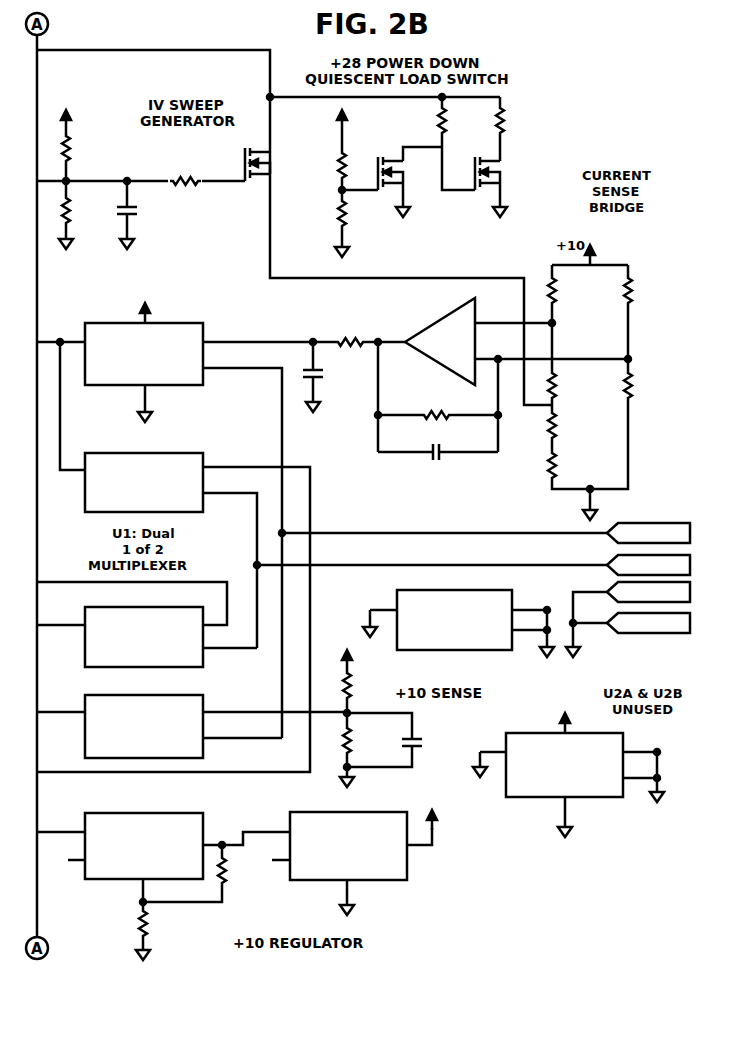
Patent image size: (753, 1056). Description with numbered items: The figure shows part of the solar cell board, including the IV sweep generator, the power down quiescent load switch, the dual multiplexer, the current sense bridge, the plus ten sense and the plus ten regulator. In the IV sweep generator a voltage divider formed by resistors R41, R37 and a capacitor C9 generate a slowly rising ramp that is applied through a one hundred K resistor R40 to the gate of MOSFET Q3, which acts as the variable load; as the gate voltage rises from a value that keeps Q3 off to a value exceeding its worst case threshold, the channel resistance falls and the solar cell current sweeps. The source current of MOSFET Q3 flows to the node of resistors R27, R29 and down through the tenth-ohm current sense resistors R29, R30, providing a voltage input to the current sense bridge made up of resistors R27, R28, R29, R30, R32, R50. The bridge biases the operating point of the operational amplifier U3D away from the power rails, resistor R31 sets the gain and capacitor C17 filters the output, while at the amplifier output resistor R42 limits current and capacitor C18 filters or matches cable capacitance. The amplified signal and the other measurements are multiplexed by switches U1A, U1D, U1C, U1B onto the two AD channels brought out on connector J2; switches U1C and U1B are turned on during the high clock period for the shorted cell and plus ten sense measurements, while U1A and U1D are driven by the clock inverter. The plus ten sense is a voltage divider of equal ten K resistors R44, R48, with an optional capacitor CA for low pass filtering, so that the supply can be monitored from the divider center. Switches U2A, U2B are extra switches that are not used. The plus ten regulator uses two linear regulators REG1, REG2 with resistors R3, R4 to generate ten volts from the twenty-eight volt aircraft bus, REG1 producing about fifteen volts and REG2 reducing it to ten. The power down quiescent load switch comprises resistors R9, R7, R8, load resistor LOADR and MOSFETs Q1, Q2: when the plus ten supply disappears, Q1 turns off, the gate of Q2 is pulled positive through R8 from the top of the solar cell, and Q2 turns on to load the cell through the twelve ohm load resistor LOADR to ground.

The voltage divider resistor R41 is at (86, 139).
The voltage divider resistor R37 is at (85, 215).
The capacitor C9 is at (156, 215).
The 100K resistor R40 is at (187, 166).
The MOSFET Q3 is at (243, 164).
The resistor R9 is at (326, 150).
The resistor R7 is at (364, 223).
The MOSFET Q1 is at (392, 182).
The resistor R8 is at (462, 143).
The load resistor LOADR is at (528, 129).
The MOSFET Q2 is at (479, 187).
The bridge resistor R50 is at (575, 290).
The bridge resistor R32 is at (651, 290).
The bridge resistor R27 is at (575, 385).
The bridge resistor R28 is at (651, 385).
The current sense resistor R29 is at (567, 425).
The current sense resistor R30 is at (567, 465).
The operational amplifier U3D is at (441, 339).
The current limiting resistor R42 is at (350, 326).
The capacitor C18 is at (330, 377).
The gain resistor R31 is at (438, 397).
The capacitor C17 is at (438, 467).
The switch U1A is at (140, 354).
The switch U1D is at (145, 474).
The switch U1C is at (141, 628).
The switch U1B is at (141, 718).
The 10K resistor R44 is at (362, 683).
The 10K resistor R48 is at (361, 750).
The capacitor CA is at (401, 740).
The switch U2B is at (458, 615).
The connector J2 is at (628, 581).
The switch U2A is at (568, 767).
The regulator REG1 is at (163, 850).
The resistor R3 is at (203, 873).
The resistor R4 is at (164, 931).
The regulator REG2 is at (366, 855).